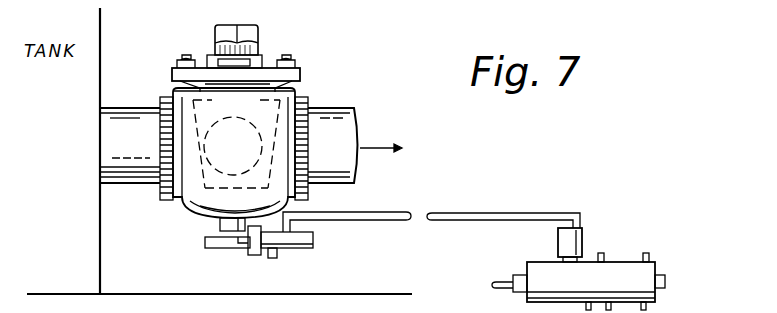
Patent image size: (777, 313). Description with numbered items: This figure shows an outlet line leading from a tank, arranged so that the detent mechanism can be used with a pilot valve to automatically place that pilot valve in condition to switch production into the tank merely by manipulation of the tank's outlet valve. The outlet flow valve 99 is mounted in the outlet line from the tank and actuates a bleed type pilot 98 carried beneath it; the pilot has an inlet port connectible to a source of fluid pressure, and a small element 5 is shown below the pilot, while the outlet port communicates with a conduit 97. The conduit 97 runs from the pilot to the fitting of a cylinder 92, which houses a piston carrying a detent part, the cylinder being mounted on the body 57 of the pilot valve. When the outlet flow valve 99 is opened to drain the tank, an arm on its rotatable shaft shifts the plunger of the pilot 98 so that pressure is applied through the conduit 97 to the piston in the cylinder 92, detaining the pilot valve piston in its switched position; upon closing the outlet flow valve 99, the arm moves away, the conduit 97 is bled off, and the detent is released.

The outlet flow valve 99 is at (310, 96).
The bleed type pilot 98 is at (287, 250).
The pivot pin 5 is at (271, 267).
The conduit 97 is at (458, 212).
The cylinder 92 is at (584, 238).
The body 57 is at (627, 261).